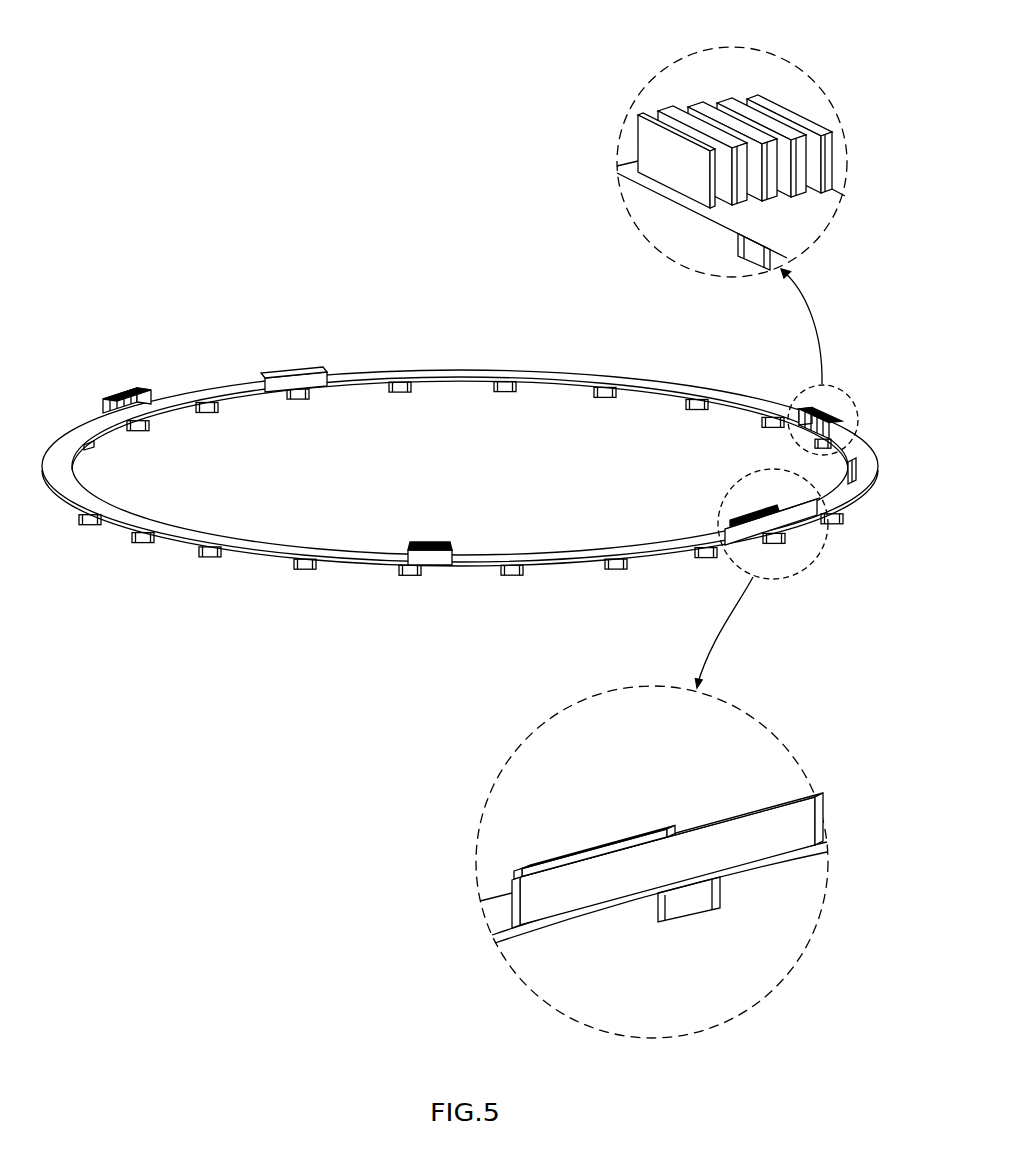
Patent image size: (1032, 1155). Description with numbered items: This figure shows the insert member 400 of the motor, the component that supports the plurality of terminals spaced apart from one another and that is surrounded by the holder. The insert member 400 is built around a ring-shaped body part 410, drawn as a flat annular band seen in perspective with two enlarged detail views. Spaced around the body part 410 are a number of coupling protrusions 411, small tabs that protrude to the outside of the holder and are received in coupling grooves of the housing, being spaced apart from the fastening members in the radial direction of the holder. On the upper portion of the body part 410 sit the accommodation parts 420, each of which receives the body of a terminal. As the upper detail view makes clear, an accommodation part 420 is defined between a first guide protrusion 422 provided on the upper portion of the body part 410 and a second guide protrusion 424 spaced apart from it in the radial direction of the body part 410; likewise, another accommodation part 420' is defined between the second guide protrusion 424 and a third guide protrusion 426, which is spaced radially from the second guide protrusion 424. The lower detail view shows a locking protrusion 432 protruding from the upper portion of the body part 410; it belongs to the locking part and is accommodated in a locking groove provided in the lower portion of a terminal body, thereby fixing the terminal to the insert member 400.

The insert member 400 is at (209, 352).
The body part 410 is at (190, 545).
The coupling protrusions 411 is at (307, 569).
The accommodation part 420 is at (503, 225).
The another accommodation part 420' is at (733, 108).
The first guide protrusion 422 is at (827, 188).
The second guide protrusion 424 is at (800, 192).
The third guide protrusion 426 is at (771, 197).
The locking protrusion 432 is at (299, 375).